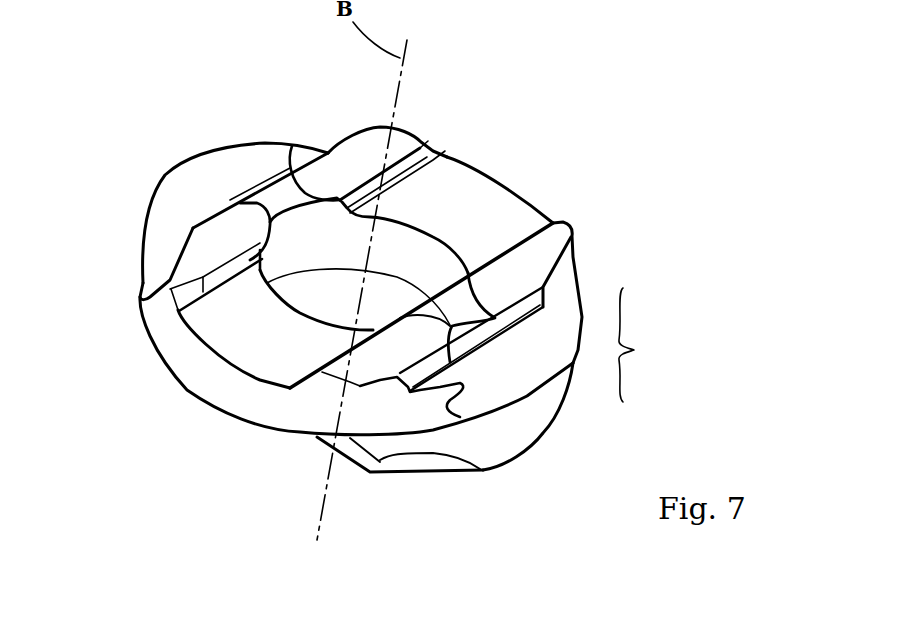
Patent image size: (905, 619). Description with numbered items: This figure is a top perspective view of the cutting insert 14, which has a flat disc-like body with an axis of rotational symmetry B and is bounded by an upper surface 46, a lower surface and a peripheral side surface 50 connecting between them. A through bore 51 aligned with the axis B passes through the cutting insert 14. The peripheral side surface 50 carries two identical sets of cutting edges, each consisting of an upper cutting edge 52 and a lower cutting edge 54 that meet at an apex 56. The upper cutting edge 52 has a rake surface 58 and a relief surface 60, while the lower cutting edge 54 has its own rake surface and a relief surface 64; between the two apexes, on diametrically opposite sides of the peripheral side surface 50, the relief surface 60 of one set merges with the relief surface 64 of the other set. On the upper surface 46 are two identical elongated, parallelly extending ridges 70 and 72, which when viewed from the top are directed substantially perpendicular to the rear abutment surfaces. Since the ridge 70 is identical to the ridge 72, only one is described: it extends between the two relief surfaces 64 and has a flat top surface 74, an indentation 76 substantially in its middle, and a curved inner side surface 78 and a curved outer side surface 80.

The cutting insert 14 is at (603, 63).
The upper surface 46 is at (201, 197).
The peripheral side surface 50 is at (580, 379).
The through bore 51 is at (417, 252).
The upper cutting edge 52 is at (208, 201).
The lower cutting edge 54 is at (217, 410).
The apex 56 is at (357, 334).
The rake surface 58 is at (513, 380).
The relief surface 60 is at (513, 433).
The relief surface 64 is at (183, 360).
The ridge 70 is at (218, 256).
The ridge 72 is at (543, 247).
The flat top surface 74 is at (315, 180).
The indentation 76 is at (272, 183).
The inner side surface 78 is at (442, 152).
The outer side surface 80 is at (326, 152).